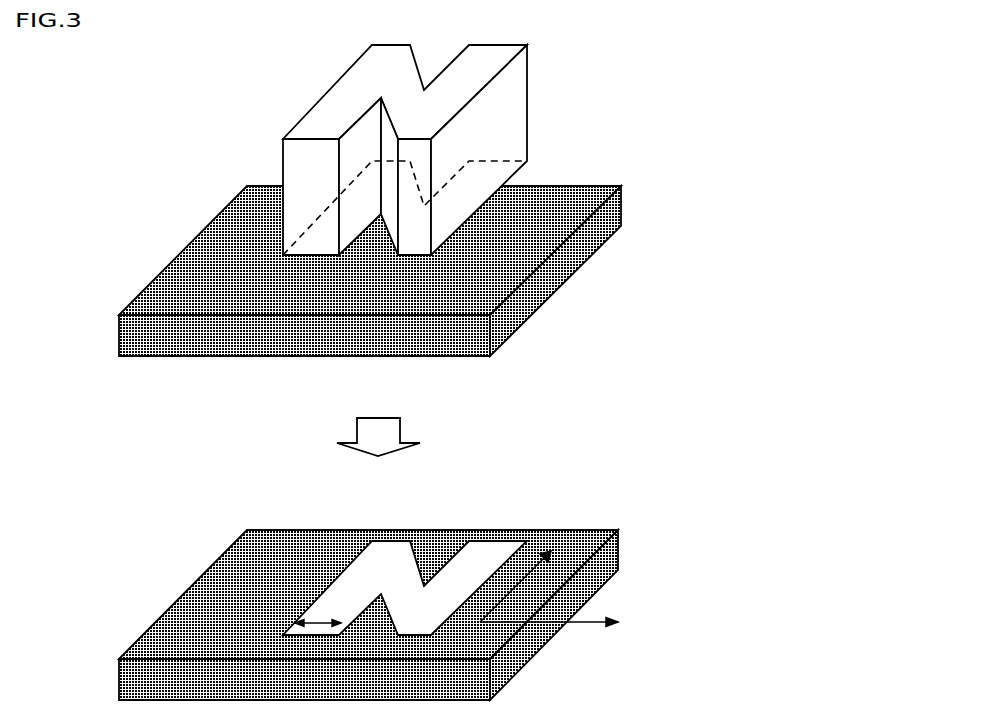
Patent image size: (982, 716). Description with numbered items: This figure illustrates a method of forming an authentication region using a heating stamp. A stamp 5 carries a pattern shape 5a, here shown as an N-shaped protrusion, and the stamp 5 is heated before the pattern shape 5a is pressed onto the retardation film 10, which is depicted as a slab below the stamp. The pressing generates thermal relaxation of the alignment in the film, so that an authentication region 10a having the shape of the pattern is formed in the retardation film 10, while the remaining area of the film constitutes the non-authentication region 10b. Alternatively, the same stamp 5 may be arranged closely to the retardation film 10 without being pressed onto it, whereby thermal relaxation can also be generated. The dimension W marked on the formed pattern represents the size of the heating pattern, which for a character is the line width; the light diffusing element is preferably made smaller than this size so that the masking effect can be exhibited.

The stamp 5 is at (469, 148).
The pattern shape 5a is at (468, 188).
The retardation film 10 is at (428, 271).
The authentication region 10a is at (280, 538).
The non-authentication region 10b is at (330, 570).